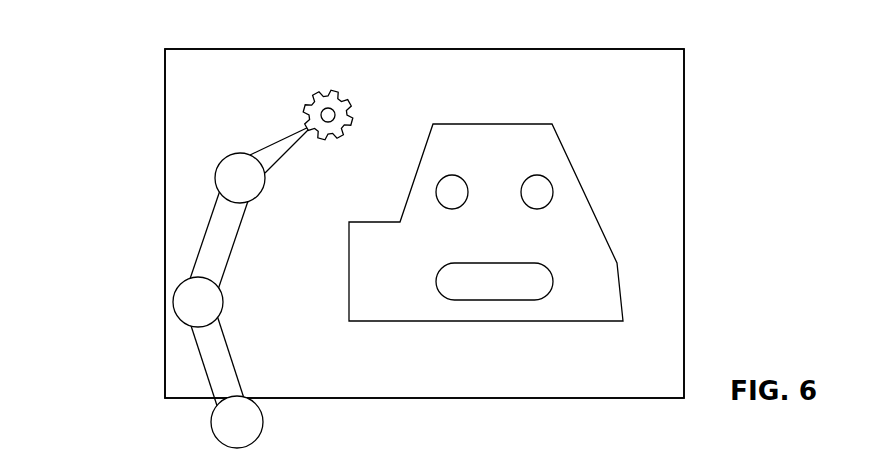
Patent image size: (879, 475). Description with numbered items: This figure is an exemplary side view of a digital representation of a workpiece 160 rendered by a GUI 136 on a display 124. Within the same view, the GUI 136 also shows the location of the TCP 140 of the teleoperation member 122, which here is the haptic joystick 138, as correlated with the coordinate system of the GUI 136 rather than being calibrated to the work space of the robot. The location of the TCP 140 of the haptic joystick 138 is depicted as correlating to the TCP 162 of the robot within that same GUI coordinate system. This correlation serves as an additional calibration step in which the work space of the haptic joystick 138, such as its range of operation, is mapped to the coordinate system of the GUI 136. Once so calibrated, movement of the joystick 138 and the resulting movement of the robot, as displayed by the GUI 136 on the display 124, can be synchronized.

The teleoperation member 122 is at (202, 365).
The display 124 is at (165, 110).
The GUI 136 is at (655, 351).
The haptic joystick 138 is at (172, 286).
The TCP of the haptic joystick 140 is at (330, 90).
The workpiece 160 is at (573, 223).
The TCP of the robot 162 is at (271, 78).